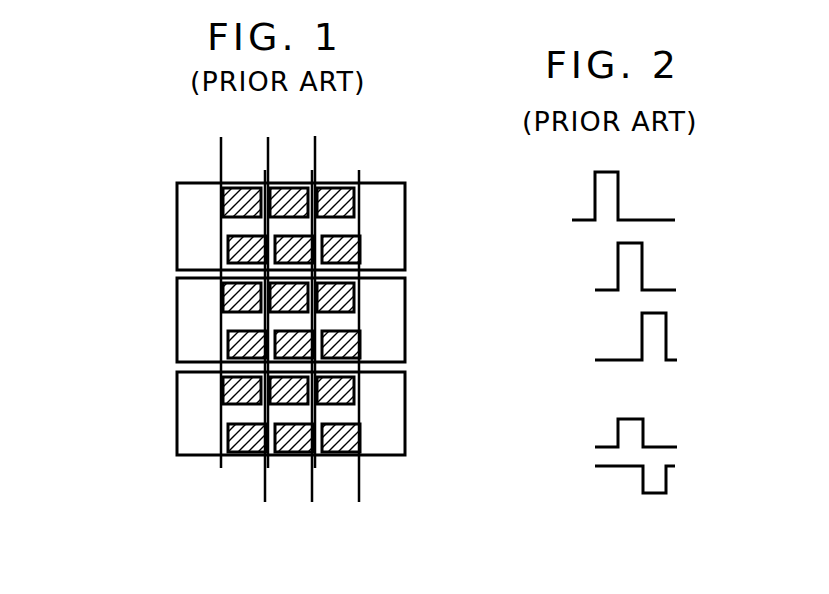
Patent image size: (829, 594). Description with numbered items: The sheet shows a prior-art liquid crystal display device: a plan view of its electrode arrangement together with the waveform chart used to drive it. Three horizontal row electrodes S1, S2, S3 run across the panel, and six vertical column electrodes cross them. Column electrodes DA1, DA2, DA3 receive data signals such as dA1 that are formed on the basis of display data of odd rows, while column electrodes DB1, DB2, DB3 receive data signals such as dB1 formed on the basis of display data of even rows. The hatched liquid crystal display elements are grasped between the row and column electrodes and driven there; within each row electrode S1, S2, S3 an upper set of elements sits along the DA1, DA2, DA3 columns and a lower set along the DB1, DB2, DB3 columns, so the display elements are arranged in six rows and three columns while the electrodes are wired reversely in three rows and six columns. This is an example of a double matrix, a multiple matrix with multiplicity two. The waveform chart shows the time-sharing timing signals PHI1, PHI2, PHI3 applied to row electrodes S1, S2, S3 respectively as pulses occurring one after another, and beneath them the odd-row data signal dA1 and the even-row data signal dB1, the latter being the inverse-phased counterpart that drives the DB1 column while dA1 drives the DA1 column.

In FIG. 1, the row electrode S1 is at (177, 228).
In FIG. 1, the row electrode S2 is at (177, 323).
In FIG. 1, the row electrode S3 is at (177, 417).
In FIG. 1, the column electrode DA1 is at (202, 284).
In FIG. 1, the column electrode DA2 is at (267, 284).
In FIG. 1, the column electrode DA3 is at (333, 284).
In FIG. 1, the column electrode DB1 is at (246, 357).
In FIG. 1, the column electrode DB2 is at (309, 357).
In FIG. 1, the column electrode DB3 is at (378, 357).
In FIG. 2, the time sharing timing signal PHI1 is at (601, 204).
In FIG. 2, the time sharing timing signal PHI2 is at (602, 275).
In FIG. 2, the time sharing timing signal PHI3 is at (602, 345).
In FIG. 2, the data signal dA1 is at (602, 436).
In FIG. 2, the data signal dB1 is at (601, 482).